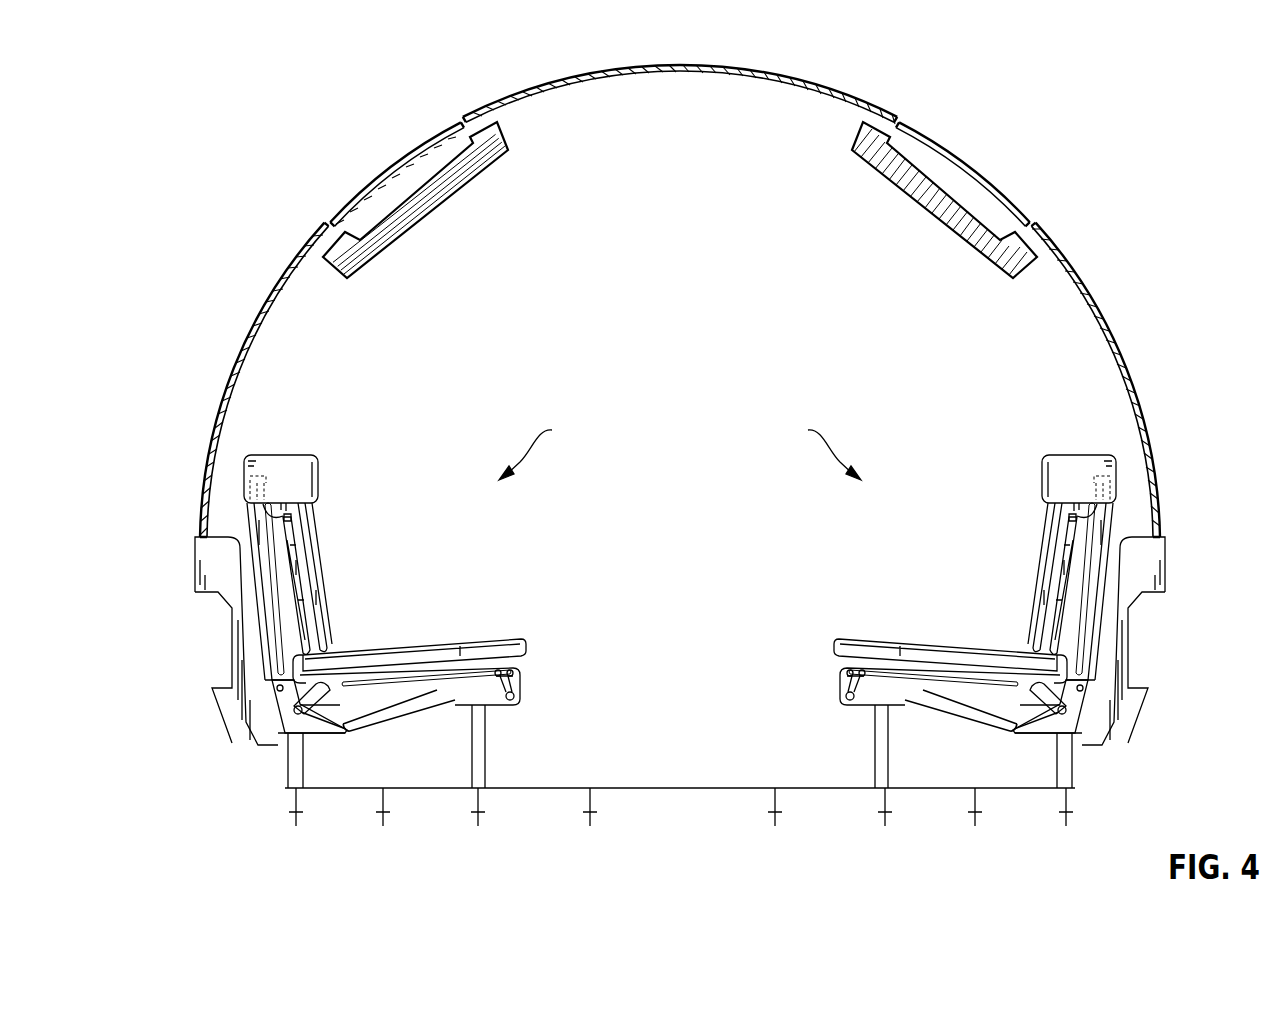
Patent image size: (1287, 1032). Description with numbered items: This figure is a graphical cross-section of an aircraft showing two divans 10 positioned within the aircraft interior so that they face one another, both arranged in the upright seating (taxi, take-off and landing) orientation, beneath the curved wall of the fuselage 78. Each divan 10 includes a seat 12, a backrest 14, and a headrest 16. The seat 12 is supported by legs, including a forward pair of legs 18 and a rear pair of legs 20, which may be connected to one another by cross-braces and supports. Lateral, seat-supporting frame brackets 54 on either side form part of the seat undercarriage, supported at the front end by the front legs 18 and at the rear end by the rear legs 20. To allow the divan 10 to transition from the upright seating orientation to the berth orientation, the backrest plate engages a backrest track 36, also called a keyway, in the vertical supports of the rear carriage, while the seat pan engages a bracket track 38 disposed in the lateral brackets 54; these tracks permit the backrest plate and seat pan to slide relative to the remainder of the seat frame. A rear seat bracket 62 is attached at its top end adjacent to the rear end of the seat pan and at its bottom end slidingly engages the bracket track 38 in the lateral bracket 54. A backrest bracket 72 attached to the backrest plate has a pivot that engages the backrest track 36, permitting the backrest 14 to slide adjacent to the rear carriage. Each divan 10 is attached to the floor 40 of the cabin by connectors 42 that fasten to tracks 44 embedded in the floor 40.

The divan 10 is at (680, 446).
The seat 12 is at (452, 652).
The backrest 14 is at (322, 596).
The headrest 16 is at (322, 468).
The forward pair of legs 18 is at (484, 735).
The rear pair of legs 20 is at (292, 752).
The backrest track 36 is at (272, 571).
The bracket track 38 is at (340, 723).
The floor 40 is at (638, 787).
The connectors 42 is at (888, 815).
The tracks 44 is at (598, 815).
The frame brackets 54 is at (518, 695).
The rear seat bracket 62 is at (320, 690).
The backrest bracket 72 is at (290, 512).
The fuselage 78 is at (1096, 300).